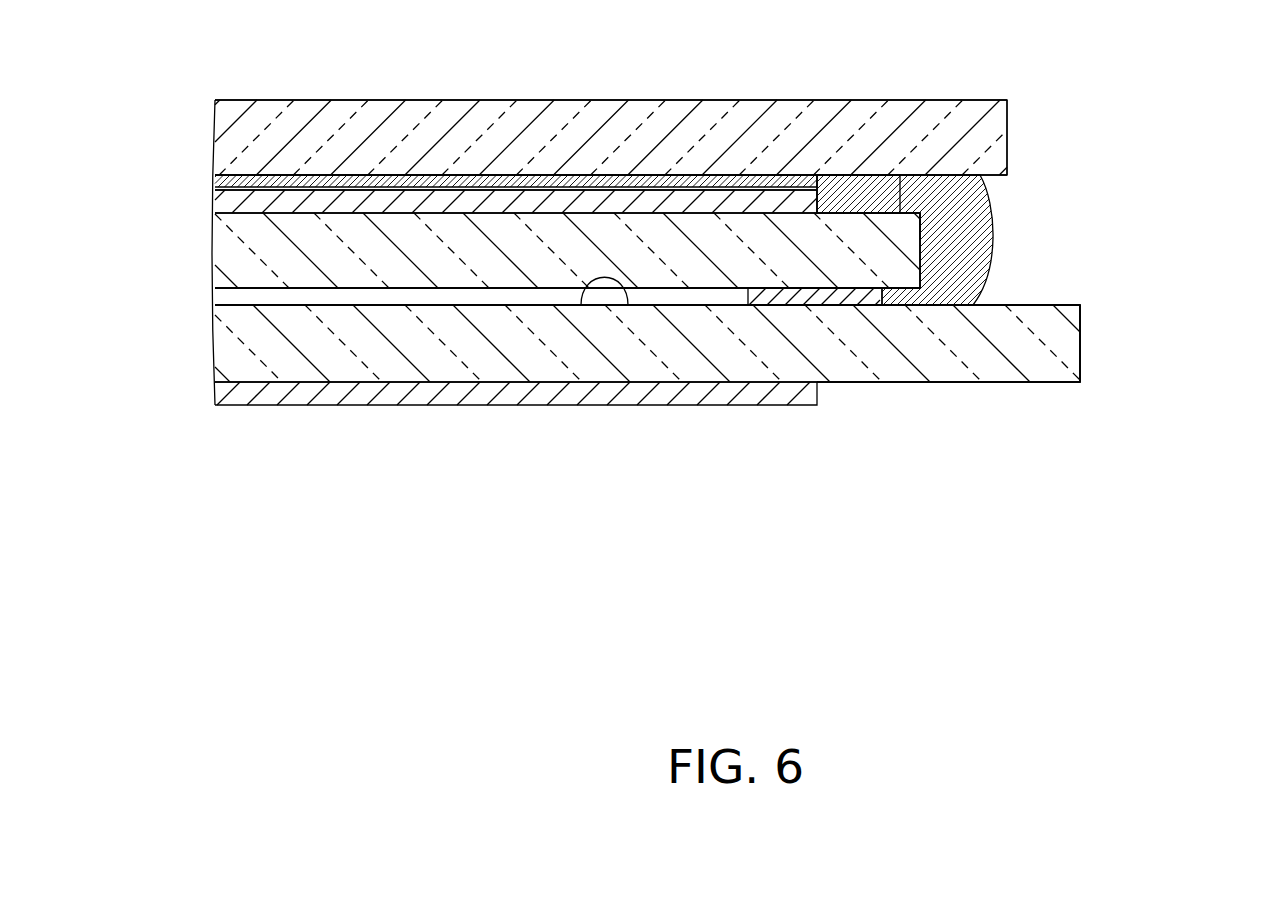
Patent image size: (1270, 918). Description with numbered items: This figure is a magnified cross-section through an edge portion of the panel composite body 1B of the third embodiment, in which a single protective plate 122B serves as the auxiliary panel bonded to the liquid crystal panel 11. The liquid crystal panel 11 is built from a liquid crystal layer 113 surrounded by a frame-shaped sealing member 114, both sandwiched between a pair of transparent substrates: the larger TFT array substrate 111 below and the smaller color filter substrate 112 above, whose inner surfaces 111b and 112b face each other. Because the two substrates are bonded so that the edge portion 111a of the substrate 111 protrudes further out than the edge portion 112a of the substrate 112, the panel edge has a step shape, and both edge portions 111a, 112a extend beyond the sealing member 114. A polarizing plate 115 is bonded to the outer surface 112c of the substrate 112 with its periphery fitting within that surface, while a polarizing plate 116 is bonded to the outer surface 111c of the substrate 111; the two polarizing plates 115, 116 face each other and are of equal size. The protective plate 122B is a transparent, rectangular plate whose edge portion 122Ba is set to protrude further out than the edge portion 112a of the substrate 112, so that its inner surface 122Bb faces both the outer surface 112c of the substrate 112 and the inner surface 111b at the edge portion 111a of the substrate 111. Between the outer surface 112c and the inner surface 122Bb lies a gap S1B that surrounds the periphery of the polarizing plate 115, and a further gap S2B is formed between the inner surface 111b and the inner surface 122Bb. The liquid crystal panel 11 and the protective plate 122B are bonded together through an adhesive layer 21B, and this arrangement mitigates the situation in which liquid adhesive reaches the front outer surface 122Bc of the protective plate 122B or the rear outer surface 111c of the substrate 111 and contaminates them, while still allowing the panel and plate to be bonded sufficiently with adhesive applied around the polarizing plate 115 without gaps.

The protective plate 122B is at (223, 122).
The edge portion of protective plate 122Ba is at (993, 122).
The outer surface of protective plate 122Bc is at (977, 100).
The inner surface of protective plate 122Bb is at (990, 178).
The adhesive layer 21B is at (217, 180).
The polarizing plate 115 is at (223, 200).
The color filter substrate 112 is at (225, 252).
The outer surface of CF substrate 112c is at (877, 212).
The edge portion of CF substrate 112a is at (913, 253).
The inner surface of CF substrate 112b is at (432, 288).
The liquid crystal layer 113 is at (223, 295).
The sealing member 114 is at (808, 297).
The TFT array substrate 111 is at (225, 337).
The edge portion of TFT array substrate 111a is at (1060, 338).
The outer surface of TFT array substrate 111c is at (1068, 383).
The inner surface of TFT array substrate 111b is at (581, 305).
The polarizing plate 116 is at (217, 390).
The gap S1B is at (843, 197).
The gap S2B is at (953, 296).
The liquid crystal panel 11 is at (987, 410).
The panel composite body 1B is at (1107, 533).